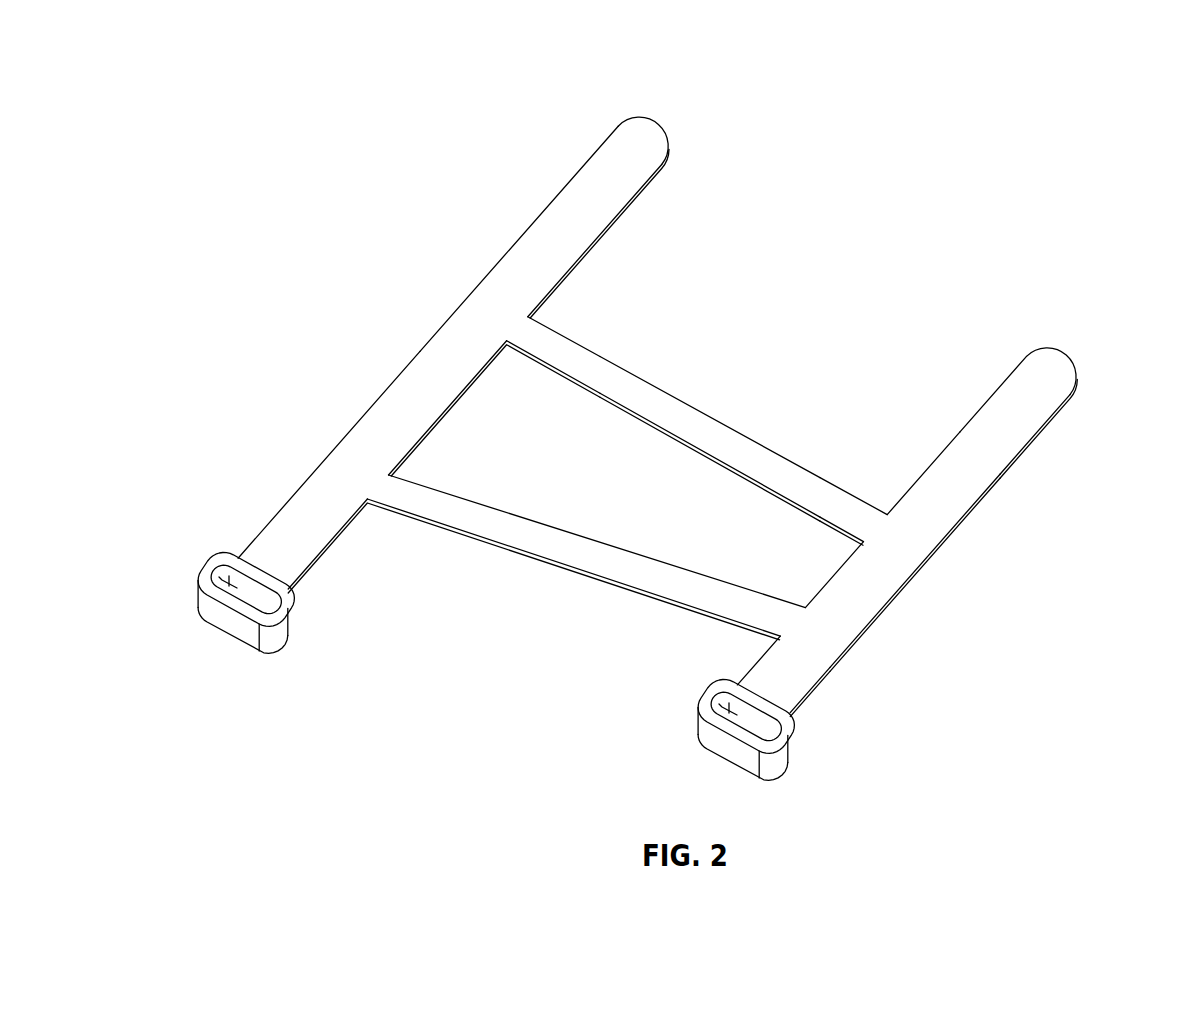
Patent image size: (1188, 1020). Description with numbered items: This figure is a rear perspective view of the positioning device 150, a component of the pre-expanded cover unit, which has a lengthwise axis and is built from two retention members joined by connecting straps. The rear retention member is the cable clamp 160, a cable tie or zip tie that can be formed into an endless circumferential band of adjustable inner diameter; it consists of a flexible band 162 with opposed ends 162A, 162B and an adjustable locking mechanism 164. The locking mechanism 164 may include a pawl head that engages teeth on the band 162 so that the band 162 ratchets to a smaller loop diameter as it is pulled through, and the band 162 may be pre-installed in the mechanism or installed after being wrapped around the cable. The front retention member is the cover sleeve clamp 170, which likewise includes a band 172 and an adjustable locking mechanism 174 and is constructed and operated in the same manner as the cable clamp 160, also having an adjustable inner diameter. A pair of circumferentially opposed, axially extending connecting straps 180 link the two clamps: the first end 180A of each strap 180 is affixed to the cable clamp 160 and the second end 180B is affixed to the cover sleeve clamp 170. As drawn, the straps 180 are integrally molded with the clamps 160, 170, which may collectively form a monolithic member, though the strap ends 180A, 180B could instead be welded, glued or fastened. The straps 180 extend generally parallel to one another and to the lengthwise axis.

The positioning device 150 is at (420, 60).
The cable clamp 160 is at (1032, 499).
The flexible band 162 is at (875, 597).
The band end 162A is at (1068, 391).
The band end 162B is at (790, 713).
The adjustable locking mechanism 164 is at (780, 753).
The cover sleeve clamp 170 is at (510, 193).
The band 172 is at (388, 383).
The adjustable locking mechanism 174 is at (238, 627).
The connecting straps 180 is at (718, 400).
The first end 180A is at (860, 518).
The second end 180B is at (520, 330).